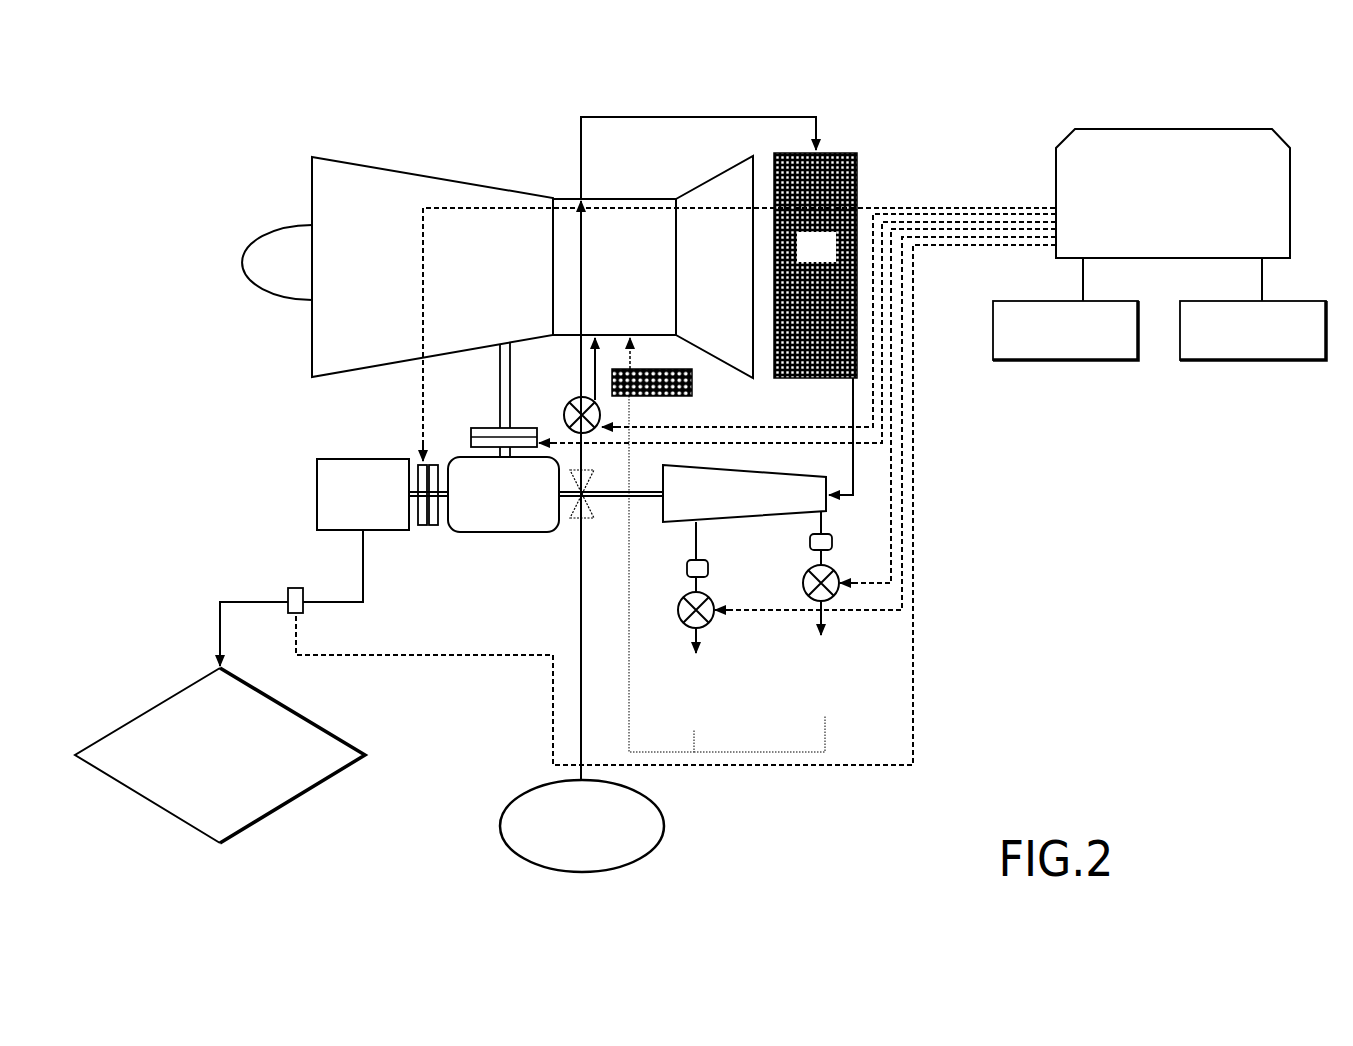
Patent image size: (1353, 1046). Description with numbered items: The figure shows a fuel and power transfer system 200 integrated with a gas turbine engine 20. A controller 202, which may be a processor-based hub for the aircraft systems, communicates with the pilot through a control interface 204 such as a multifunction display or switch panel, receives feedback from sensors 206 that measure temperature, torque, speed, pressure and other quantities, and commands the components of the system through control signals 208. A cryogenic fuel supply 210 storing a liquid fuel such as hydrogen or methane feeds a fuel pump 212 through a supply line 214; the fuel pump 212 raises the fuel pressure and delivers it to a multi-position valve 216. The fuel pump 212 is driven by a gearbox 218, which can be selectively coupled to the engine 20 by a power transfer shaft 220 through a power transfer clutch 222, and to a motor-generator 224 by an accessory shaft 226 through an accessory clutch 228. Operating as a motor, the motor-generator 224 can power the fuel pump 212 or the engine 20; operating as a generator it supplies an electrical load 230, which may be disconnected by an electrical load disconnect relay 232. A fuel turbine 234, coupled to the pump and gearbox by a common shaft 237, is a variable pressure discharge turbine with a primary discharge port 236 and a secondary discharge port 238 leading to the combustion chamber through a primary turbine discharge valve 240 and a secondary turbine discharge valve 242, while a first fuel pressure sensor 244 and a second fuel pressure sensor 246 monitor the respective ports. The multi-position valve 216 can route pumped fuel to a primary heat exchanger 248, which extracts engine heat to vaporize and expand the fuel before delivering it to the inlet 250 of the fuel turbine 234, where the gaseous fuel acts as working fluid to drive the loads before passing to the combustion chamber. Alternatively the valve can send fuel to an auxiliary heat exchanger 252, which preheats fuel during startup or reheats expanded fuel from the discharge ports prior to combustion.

The gas turbine engine 20 is at (416, 143).
The system 200 is at (993, 150).
The controller 202 is at (1172, 129).
The control interface 204 is at (1250, 361).
The sensors 206 is at (1065, 361).
The control signals 208 is at (968, 256).
The cryogenic fuel supply 210 is at (664, 815).
The fuel pump 212 is at (578, 518).
The supply line 214 is at (579, 630).
The multi-position valve 216 is at (573, 400).
The gearbox 218 is at (503, 494).
The power transfer shaft 220 is at (500, 372).
The power transfer clutch 222 is at (492, 428).
The motor-generator 224 is at (382, 494).
The accessory shaft 226 is at (434, 527).
The accessory clutch 228 is at (421, 527).
The electrical load 230 is at (319, 722).
The electrical load disconnect relay 232 is at (289, 589).
The fuel turbine 234 is at (744, 493).
The primary discharge port 236 is at (694, 553).
The common shaft 237 is at (607, 498).
The secondary discharge port 238 is at (823, 522).
The primary turbine discharge valve 240 is at (684, 603).
The secondary turbine discharge valve 242 is at (802, 583).
The first fuel pressure sensor 244 is at (708, 570).
The second fuel pressure sensor 246 is at (833, 540).
The primary heat exchanger 248 is at (815, 324).
The inlet 250 is at (755, 468).
The auxiliary heat exchanger 252 is at (692, 383).